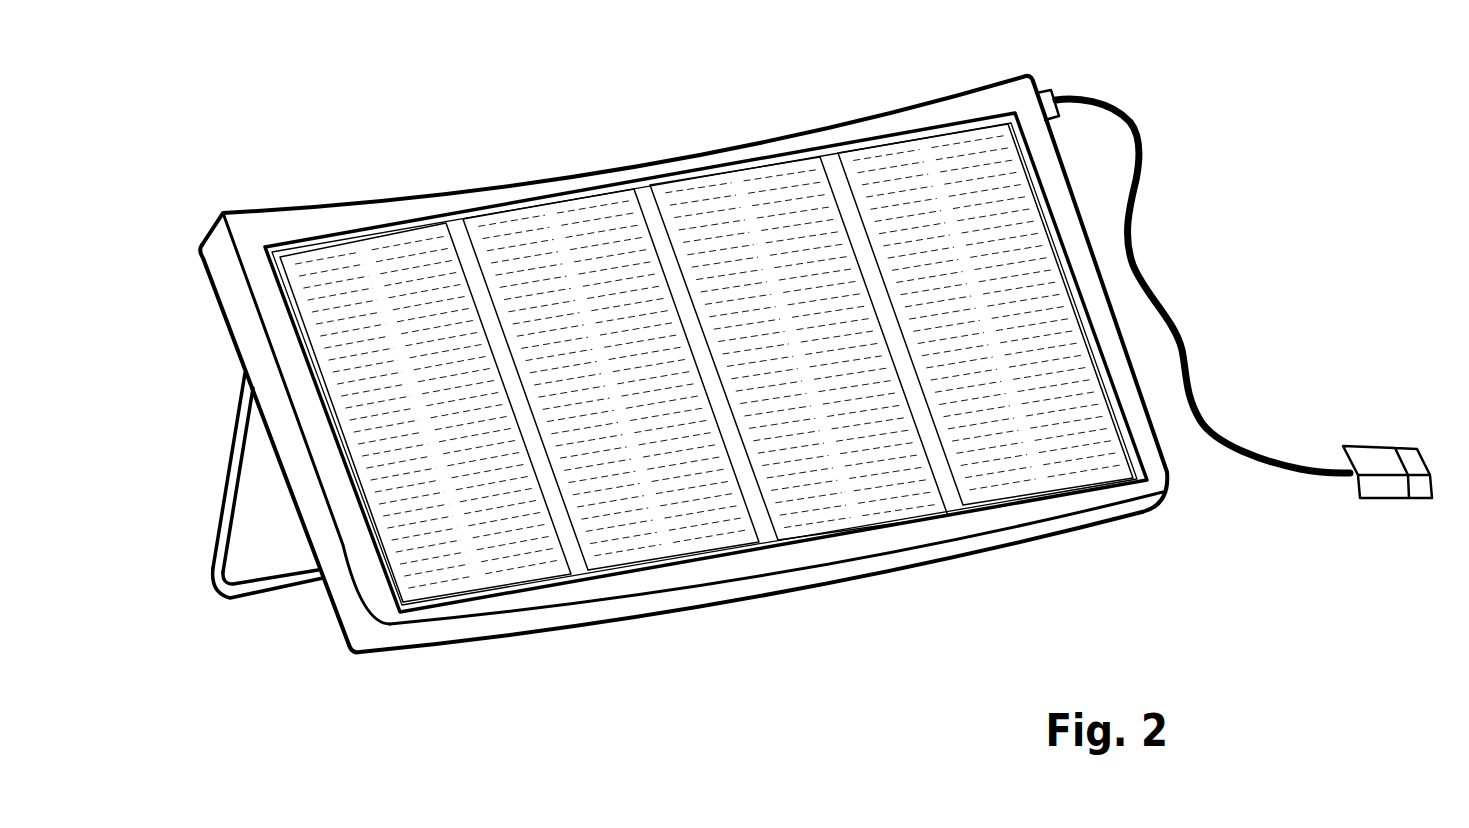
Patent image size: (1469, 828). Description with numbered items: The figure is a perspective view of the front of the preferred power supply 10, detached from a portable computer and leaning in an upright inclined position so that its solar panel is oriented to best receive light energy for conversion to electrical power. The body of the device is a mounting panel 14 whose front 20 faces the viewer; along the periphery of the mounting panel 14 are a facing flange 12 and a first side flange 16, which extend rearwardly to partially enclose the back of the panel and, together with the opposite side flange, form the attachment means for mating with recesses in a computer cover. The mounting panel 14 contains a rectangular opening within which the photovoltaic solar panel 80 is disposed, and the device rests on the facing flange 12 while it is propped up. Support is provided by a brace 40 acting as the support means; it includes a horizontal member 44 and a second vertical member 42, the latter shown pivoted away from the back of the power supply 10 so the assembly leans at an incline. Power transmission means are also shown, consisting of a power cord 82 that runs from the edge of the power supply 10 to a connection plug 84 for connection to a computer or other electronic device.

The power supply 10 is at (219, 392).
The facing flange 12 is at (821, 553).
The mounting panel 14 is at (420, 195).
The first side flange 16 is at (360, 628).
The front 20 is at (707, 597).
The brace 40 is at (211, 598).
The second vertical member 42 is at (218, 508).
The horizontal member 44 is at (270, 592).
The photovoltaic solar panel 80 is at (583, 236).
The power cord 82 is at (1187, 368).
The connection plug 84 is at (1383, 446).